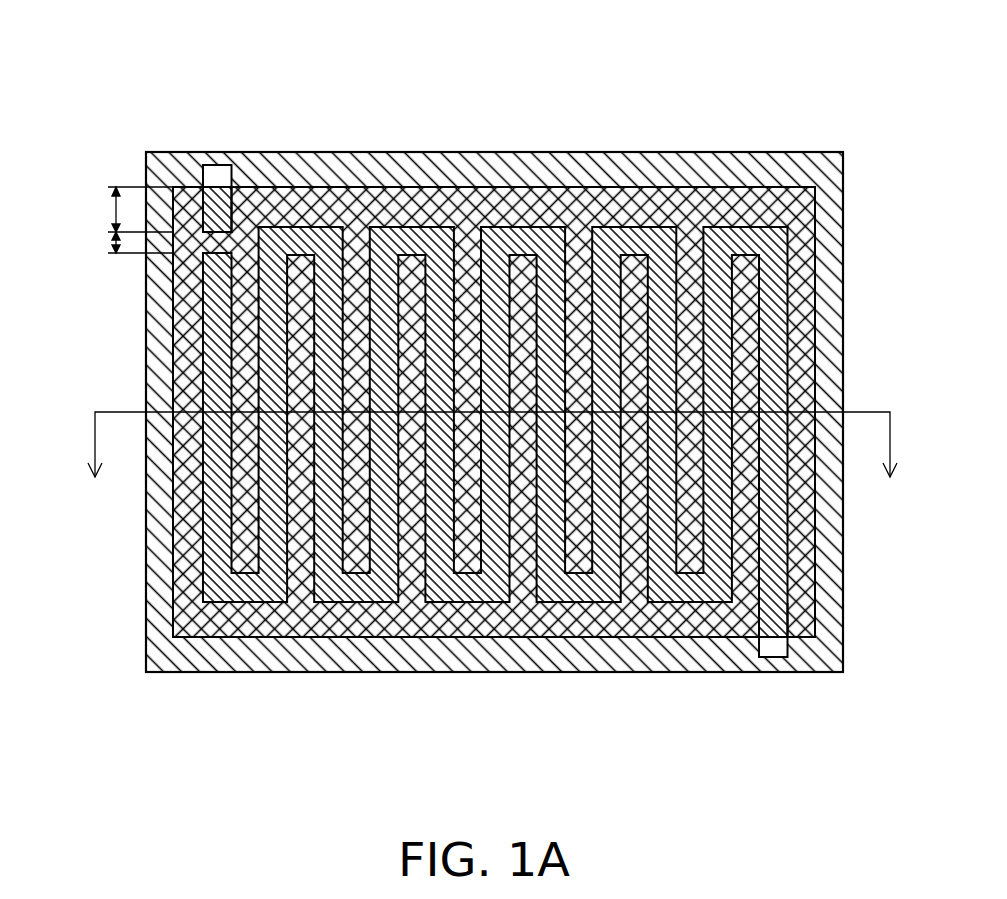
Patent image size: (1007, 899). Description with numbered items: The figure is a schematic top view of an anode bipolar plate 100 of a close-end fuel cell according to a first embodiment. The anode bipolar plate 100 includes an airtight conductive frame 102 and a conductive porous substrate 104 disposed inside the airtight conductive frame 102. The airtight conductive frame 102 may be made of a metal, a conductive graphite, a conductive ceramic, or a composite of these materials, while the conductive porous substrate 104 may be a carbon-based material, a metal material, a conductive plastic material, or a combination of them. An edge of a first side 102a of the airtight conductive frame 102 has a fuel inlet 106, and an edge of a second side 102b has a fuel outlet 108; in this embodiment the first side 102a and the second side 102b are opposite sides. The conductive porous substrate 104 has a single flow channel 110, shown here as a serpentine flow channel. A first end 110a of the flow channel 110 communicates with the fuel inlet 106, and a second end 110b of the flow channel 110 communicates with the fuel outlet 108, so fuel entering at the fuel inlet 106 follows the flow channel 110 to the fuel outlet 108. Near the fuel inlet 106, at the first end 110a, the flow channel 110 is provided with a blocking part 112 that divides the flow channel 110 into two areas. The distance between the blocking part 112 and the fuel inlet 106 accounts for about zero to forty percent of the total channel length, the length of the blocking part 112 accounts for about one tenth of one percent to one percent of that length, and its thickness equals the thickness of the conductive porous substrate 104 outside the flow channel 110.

The anode bipolar plate 100 is at (490, 380).
The airtight conductive frame 102 is at (547, 414).
The first side 102a is at (356, 151).
The second side 102b is at (450, 674).
The conductive porous substrate 104 is at (738, 188).
The fuel inlet 106 is at (215, 172).
The fuel outlet 108 is at (775, 652).
The flow channel 110 is at (204, 334).
The first end 110a is at (238, 193).
The second end 110b is at (775, 632).
The blocking part 112 is at (216, 240).